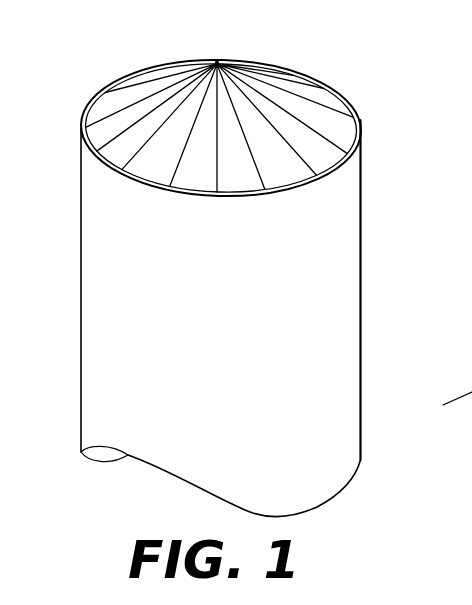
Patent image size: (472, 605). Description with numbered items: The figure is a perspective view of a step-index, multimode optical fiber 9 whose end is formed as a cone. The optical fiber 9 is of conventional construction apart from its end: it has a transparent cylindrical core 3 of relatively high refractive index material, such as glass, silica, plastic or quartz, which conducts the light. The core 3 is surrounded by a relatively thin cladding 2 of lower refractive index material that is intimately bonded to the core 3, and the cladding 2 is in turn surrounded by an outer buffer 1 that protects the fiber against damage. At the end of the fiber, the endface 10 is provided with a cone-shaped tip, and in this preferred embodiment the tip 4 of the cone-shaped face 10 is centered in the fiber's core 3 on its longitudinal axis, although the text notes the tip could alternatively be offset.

The outer buffer 1 is at (130, 186).
The cladding 2 is at (360, 120).
The core 3 is at (126, 118).
The tip 4 is at (217, 62).
The optical fiber 9 is at (364, 199).
The endface 10 is at (292, 78).